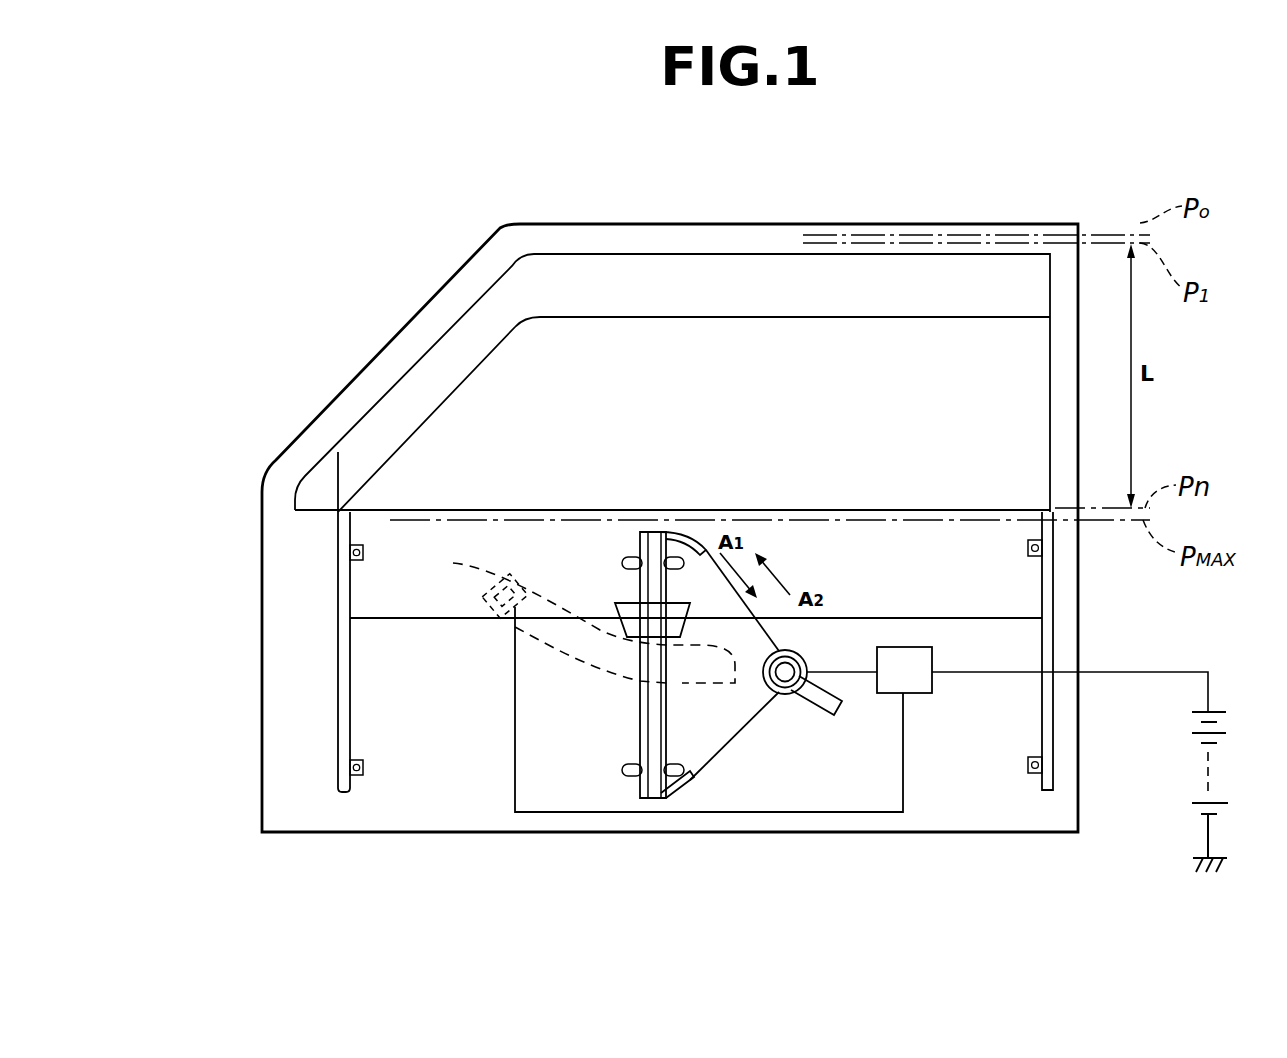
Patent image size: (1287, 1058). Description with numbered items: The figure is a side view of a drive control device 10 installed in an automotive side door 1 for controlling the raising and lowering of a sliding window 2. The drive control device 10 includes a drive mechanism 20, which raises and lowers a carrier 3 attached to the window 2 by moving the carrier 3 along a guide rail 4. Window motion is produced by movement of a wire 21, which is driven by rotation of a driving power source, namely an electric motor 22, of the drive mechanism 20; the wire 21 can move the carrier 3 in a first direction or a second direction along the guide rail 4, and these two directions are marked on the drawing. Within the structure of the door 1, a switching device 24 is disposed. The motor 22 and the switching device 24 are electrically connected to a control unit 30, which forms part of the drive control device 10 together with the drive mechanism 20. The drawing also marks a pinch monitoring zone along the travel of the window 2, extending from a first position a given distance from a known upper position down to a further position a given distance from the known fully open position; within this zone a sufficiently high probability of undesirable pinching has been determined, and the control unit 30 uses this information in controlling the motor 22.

The automotive side door 1 is at (285, 660).
The sliding window 2 is at (513, 358).
The carrier 3 is at (628, 604).
The guide rail 4 is at (640, 738).
The drive control device 10 is at (983, 576).
The drive mechanism 20 is at (810, 651).
The wire 21 is at (727, 750).
The driving power source (electric motor) 22 is at (822, 702).
The switching device 24 is at (572, 615).
The control unit 30 is at (916, 643).